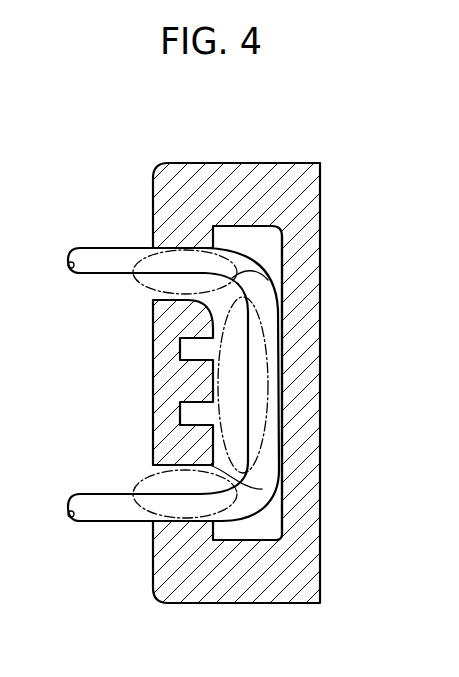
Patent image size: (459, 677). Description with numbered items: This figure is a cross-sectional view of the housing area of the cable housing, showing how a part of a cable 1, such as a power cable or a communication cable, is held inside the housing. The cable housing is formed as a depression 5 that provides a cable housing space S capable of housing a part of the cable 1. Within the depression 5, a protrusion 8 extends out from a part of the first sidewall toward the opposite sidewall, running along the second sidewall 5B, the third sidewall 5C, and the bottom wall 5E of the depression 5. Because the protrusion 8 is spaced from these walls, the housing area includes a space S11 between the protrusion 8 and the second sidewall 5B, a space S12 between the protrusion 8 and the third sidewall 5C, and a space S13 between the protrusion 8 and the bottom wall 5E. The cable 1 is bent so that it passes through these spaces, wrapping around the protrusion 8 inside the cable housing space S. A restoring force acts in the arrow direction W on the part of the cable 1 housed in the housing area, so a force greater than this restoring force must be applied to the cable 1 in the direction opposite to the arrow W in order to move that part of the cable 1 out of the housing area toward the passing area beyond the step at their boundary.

The cable 1 is at (77, 240).
The depression 5 is at (258, 537).
The second sidewall 5B is at (190, 526).
The third sidewall 5C is at (180, 246).
The bottom wall 5E is at (300, 256).
The protrusion 8 is at (153, 388).
The cable housing space S is at (268, 254).
The space S11 is at (148, 480).
The space S12 is at (150, 288).
The space S13 is at (304, 300).
The arrow direction W is at (123, 250).